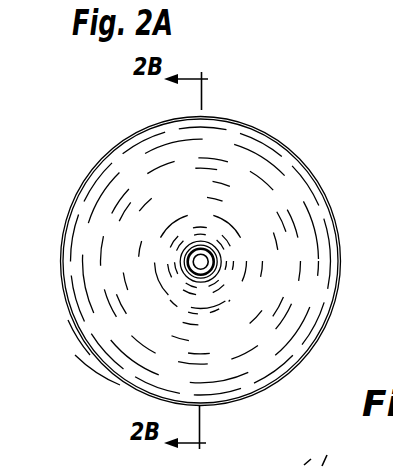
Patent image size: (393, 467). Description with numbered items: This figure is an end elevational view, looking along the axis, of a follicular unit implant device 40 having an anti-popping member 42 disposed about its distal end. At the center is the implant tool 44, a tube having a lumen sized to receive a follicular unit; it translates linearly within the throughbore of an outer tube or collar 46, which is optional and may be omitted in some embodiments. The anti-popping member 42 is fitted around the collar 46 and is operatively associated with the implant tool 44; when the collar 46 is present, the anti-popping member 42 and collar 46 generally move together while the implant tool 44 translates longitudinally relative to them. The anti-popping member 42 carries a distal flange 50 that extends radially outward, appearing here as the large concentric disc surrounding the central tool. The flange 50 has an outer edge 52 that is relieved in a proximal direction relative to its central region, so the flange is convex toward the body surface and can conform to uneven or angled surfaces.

The FU implant device 40 is at (324, 165).
The anti-popping member 42 is at (108, 381).
The implant tool 44 is at (207, 255).
The collar 46 is at (183, 242).
The distal flange 50 is at (200, 320).
The outer edge 52 is at (80, 338).